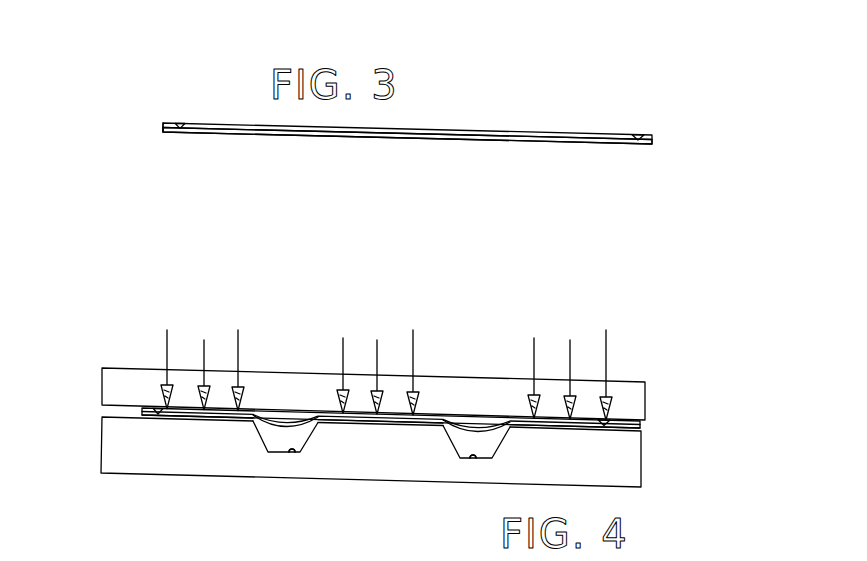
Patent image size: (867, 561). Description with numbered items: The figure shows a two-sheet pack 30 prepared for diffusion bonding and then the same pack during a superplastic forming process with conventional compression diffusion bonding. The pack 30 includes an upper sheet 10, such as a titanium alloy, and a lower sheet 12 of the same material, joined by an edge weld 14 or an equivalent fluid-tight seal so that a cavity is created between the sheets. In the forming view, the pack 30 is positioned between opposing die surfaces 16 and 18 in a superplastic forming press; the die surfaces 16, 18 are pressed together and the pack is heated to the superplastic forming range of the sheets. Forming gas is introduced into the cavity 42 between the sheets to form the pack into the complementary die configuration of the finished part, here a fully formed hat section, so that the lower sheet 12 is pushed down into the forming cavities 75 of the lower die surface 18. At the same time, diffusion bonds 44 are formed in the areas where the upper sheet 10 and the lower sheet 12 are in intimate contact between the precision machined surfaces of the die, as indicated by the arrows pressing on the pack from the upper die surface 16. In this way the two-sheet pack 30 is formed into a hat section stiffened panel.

In FIG. 3, the upper sheet 10 is at (162, 121).
In FIG. 3, the lower sheet 12 is at (206, 136).
In FIG. 4, the lower sheet 12 is at (266, 440).
In FIG. 3, the edge weld 14 is at (640, 143).
In FIG. 4, the edge weld 14 is at (157, 407).
In FIG. 4, the die surface 16 is at (102, 380).
In FIG. 4, the die surface 18 is at (101, 462).
In FIG. 3, the two-sheet pack 30 is at (636, 94).
In FIG. 4, the two-sheet pack 30 is at (647, 421).
In FIG. 4, the cavity 42 is at (490, 440).
In FIG. 4, the diffusion bonds 44 is at (167, 340).
In FIG. 4, the forming cavities 75 is at (292, 456).